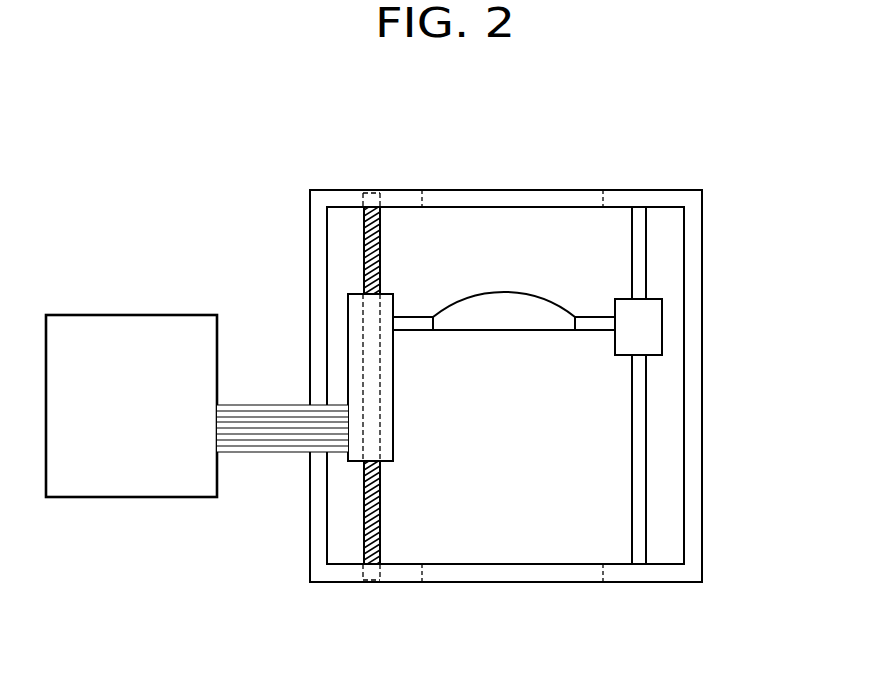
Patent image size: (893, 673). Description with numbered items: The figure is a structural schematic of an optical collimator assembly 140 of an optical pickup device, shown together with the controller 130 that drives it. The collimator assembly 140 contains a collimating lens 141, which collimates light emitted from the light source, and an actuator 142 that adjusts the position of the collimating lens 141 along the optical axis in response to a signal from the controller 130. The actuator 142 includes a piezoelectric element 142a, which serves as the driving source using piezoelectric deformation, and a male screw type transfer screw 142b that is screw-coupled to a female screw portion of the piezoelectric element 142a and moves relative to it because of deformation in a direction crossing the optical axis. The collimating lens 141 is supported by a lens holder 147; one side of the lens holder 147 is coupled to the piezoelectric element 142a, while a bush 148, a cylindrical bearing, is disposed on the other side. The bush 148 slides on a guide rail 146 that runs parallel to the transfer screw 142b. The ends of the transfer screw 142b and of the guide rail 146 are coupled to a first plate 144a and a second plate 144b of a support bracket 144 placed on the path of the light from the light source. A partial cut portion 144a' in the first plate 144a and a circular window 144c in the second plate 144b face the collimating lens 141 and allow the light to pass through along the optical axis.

The controller 130 is at (133, 315).
The collimator assembly 140 is at (510, 365).
The collimating lens 141 is at (503, 297).
The actuator 142 is at (439, 386).
The piezoelectric element 142a is at (406, 378).
The transfer screw 142b is at (380, 524).
The support bracket 144 is at (705, 280).
The first plate 144a is at (652, 170).
The partial cut portion 144a' is at (512, 170).
The second plate 144b is at (651, 573).
The circular window 144c is at (516, 573).
The guide rail 146 is at (646, 500).
The lens holder 147 is at (414, 320).
The bush 148 is at (662, 330).